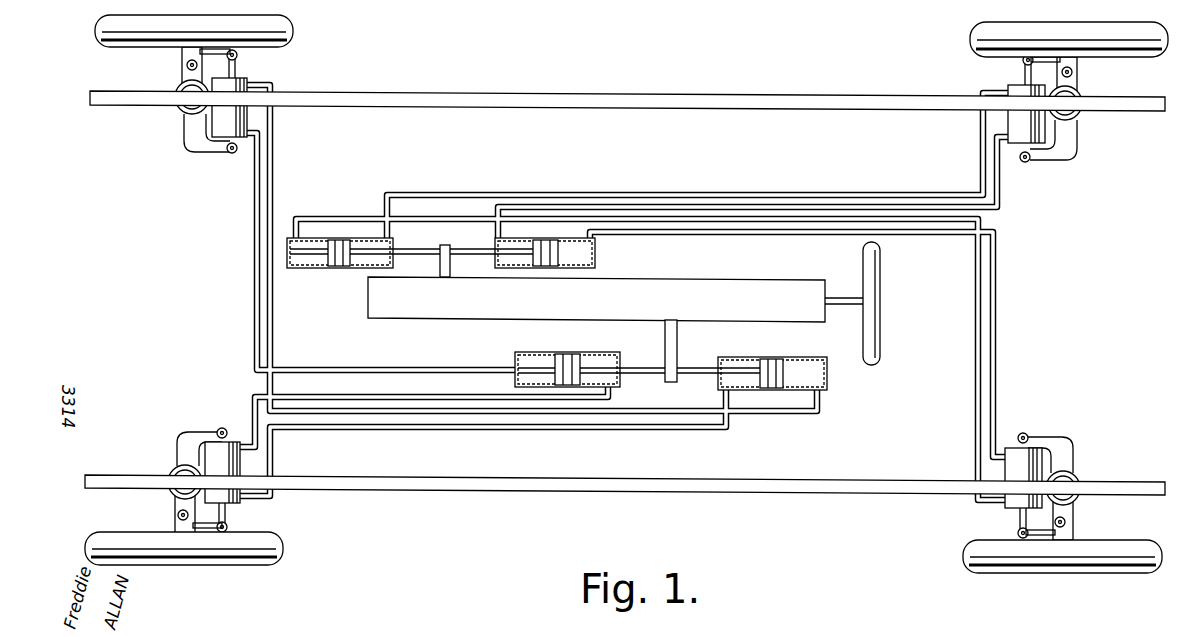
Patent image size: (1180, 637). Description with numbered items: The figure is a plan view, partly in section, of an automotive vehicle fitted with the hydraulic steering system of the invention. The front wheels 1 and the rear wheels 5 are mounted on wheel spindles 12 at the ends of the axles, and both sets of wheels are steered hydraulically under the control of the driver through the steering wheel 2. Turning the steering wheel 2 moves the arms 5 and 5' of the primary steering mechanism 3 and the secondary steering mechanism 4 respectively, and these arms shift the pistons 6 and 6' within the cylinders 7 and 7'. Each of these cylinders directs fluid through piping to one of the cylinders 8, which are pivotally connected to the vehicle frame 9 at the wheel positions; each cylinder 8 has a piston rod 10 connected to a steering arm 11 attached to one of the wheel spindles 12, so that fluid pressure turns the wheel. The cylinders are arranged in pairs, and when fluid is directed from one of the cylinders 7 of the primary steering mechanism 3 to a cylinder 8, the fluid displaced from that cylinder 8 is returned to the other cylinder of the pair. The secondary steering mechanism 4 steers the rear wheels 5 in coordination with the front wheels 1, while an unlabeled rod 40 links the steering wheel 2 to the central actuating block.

The front wheels 1 is at (290, 30).
The steering wheel 2 is at (867, 363).
The primary steering mechanism 3 is at (703, 357).
The secondary steering mechanism 4 is at (358, 274).
The rear wheels / arm 5 is at (898, 297).
The arm 5' is at (427, 251).
The pistons 6 is at (667, 371).
The pistons 6' is at (429, 257).
The cylinders 7 is at (666, 361).
The cylinders 7' is at (463, 277).
The cylinders 8 is at (222, 118).
The vehicle frame 9 is at (1028, 158).
The piston rod 10 is at (236, 72).
The steering arm 11 is at (213, 57).
The wheel spindles 12 is at (187, 50).
The push rod 40 is at (842, 305).